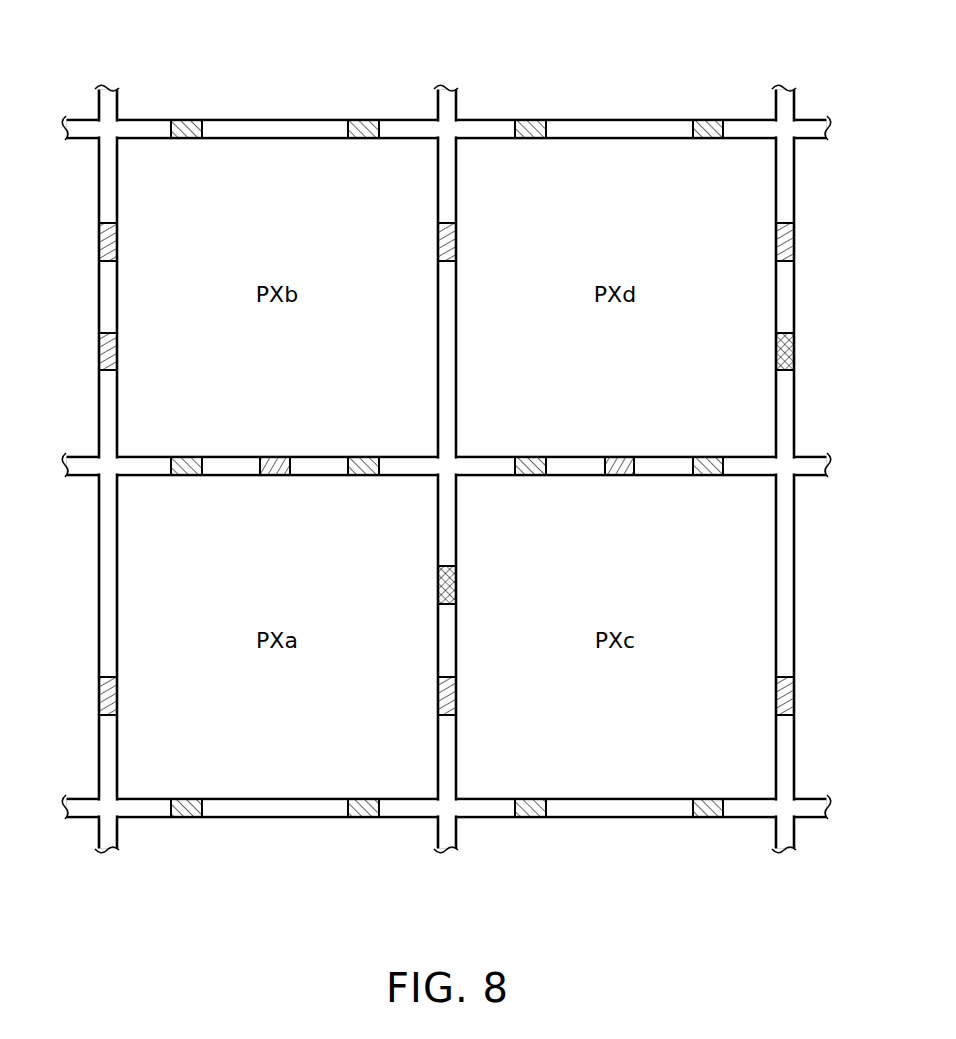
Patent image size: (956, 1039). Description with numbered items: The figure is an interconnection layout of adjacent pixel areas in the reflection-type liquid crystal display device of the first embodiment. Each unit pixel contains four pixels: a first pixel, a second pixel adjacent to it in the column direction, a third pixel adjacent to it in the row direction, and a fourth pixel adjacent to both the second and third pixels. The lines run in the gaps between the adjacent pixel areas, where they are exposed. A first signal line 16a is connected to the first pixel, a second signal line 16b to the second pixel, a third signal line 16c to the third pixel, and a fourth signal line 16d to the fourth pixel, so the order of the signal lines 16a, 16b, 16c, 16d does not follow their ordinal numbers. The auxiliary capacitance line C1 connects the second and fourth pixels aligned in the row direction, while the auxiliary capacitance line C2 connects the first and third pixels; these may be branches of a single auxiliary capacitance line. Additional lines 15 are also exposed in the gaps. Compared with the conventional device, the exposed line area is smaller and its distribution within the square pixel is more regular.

The line 15 is at (276, 476).
The first signal line 16a is at (186, 118).
The second signal line 16b is at (363, 118).
The third signal line 16c is at (709, 118).
The fourth signal line 16d is at (530, 118).
The auxiliary capacitance line C1 is at (99, 245).
The auxiliary capacitance line C2 is at (99, 698).